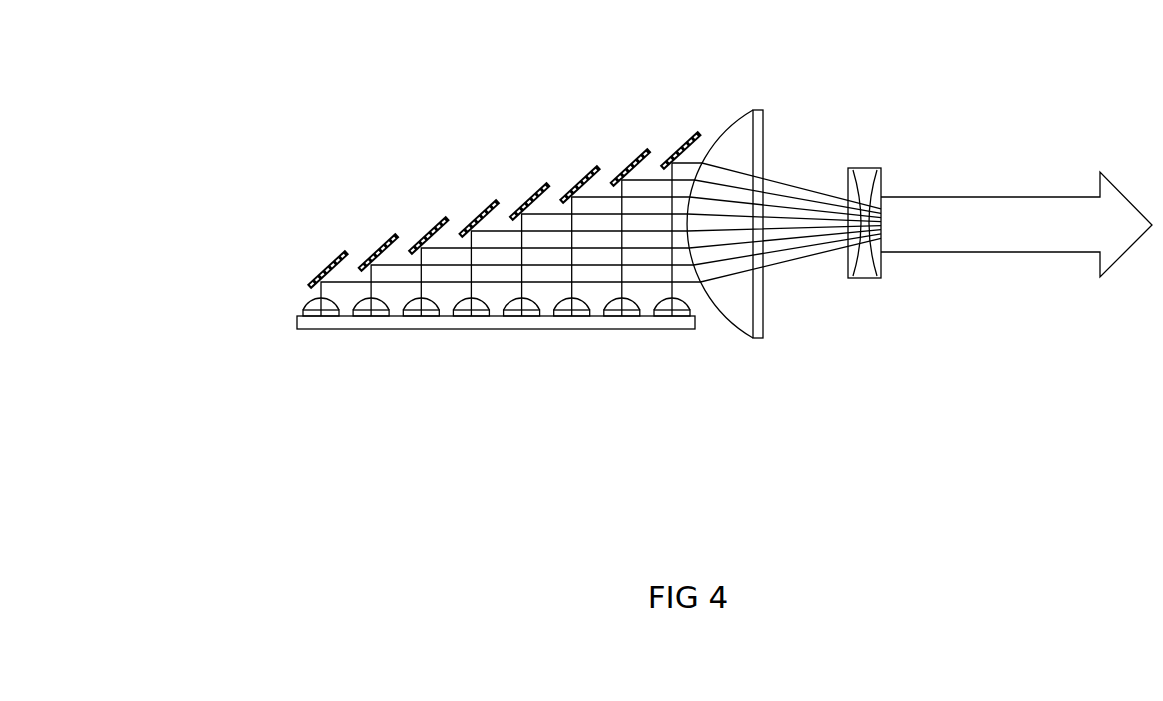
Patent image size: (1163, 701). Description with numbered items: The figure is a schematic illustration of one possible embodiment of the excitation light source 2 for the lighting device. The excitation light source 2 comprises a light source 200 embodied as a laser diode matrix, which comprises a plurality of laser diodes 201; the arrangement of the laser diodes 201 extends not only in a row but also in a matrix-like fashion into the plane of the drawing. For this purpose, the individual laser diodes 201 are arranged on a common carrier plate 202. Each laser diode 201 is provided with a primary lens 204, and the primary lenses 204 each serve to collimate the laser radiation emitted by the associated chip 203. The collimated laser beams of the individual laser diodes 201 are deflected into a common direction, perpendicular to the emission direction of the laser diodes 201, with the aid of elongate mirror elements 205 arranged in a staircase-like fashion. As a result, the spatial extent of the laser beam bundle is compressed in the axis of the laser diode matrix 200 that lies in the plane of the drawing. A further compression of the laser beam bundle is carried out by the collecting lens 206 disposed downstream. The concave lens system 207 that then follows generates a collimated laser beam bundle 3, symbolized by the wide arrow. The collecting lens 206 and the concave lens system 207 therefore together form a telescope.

The excitation light source 2 is at (520, 63).
The collimated laser beam bundle 3 is at (1005, 210).
The light source 200 is at (294, 323).
The laser diode 201 is at (301, 301).
The carrier plate 202 is at (351, 323).
The chip 203 is at (660, 313).
The primary lens 204 is at (678, 308).
The mirror element 205 is at (433, 227).
The collecting lens 206 is at (737, 140).
The concave lens system 207 is at (864, 177).